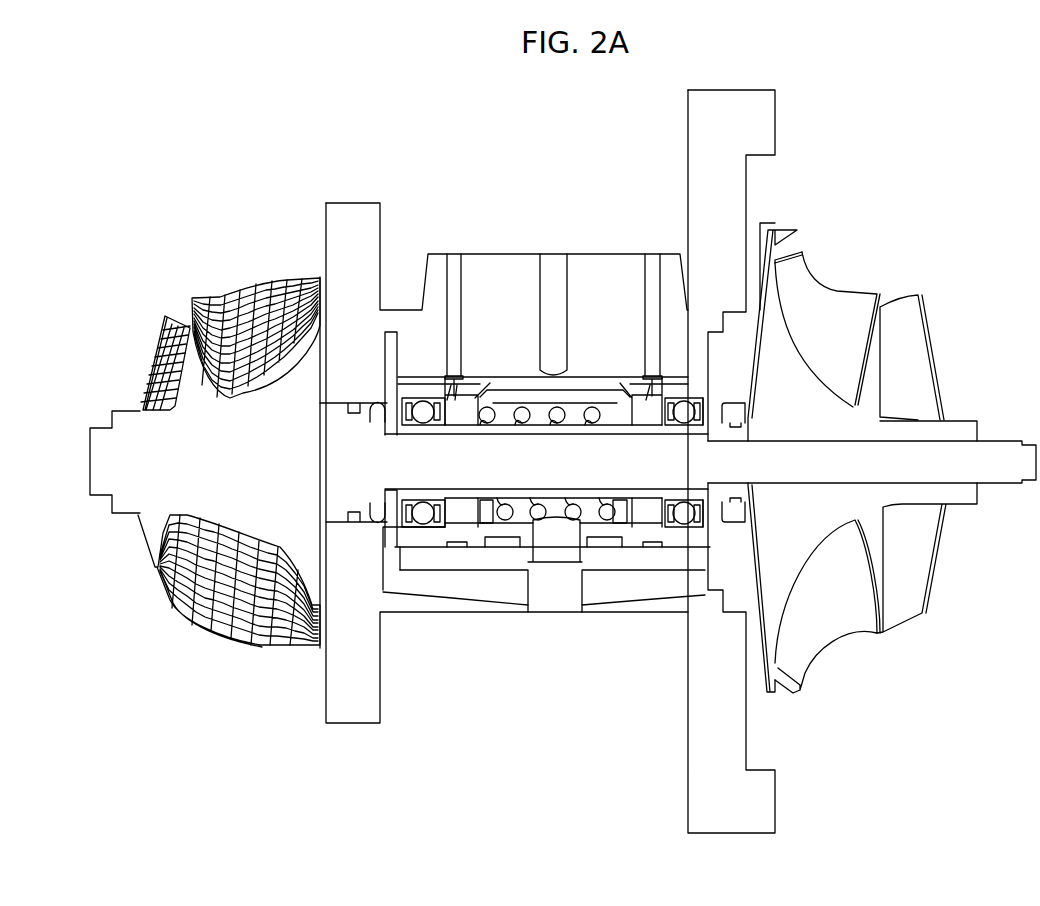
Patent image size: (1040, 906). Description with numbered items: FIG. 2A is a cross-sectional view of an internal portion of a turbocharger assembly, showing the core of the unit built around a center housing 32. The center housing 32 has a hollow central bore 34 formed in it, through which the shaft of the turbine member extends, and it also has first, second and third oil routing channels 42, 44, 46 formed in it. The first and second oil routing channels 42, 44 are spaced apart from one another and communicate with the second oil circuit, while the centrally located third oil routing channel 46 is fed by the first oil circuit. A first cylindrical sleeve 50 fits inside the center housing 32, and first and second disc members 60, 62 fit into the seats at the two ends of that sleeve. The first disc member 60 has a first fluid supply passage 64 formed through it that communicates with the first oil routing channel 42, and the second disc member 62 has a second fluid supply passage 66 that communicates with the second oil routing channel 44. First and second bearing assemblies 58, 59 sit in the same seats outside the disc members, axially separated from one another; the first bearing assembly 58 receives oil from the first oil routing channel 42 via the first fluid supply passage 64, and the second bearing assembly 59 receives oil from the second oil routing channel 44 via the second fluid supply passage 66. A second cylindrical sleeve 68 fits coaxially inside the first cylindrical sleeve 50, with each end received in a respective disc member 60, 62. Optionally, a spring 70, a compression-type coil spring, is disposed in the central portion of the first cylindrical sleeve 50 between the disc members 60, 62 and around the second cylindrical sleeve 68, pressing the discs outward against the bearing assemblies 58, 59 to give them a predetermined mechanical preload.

The center housing 32 is at (547, 461).
The hollow central bore 34 is at (342, 520).
The first oil routing channel 42 is at (652, 254).
The second oil routing channel 44 is at (454, 254).
The third oil routing channel 46 is at (556, 254).
The first cylindrical sleeve 50 is at (428, 542).
The first bearing assembly 58 is at (695, 530).
The second bearing assembly 59 is at (405, 530).
The first disc member 60 is at (637, 512).
The second disc member 62 is at (469, 512).
The first fluid supply passage 64 is at (641, 401).
The second fluid supply passage 66 is at (467, 401).
The second cylindrical sleeve 68 is at (607, 492).
The spring 70 is at (540, 520).